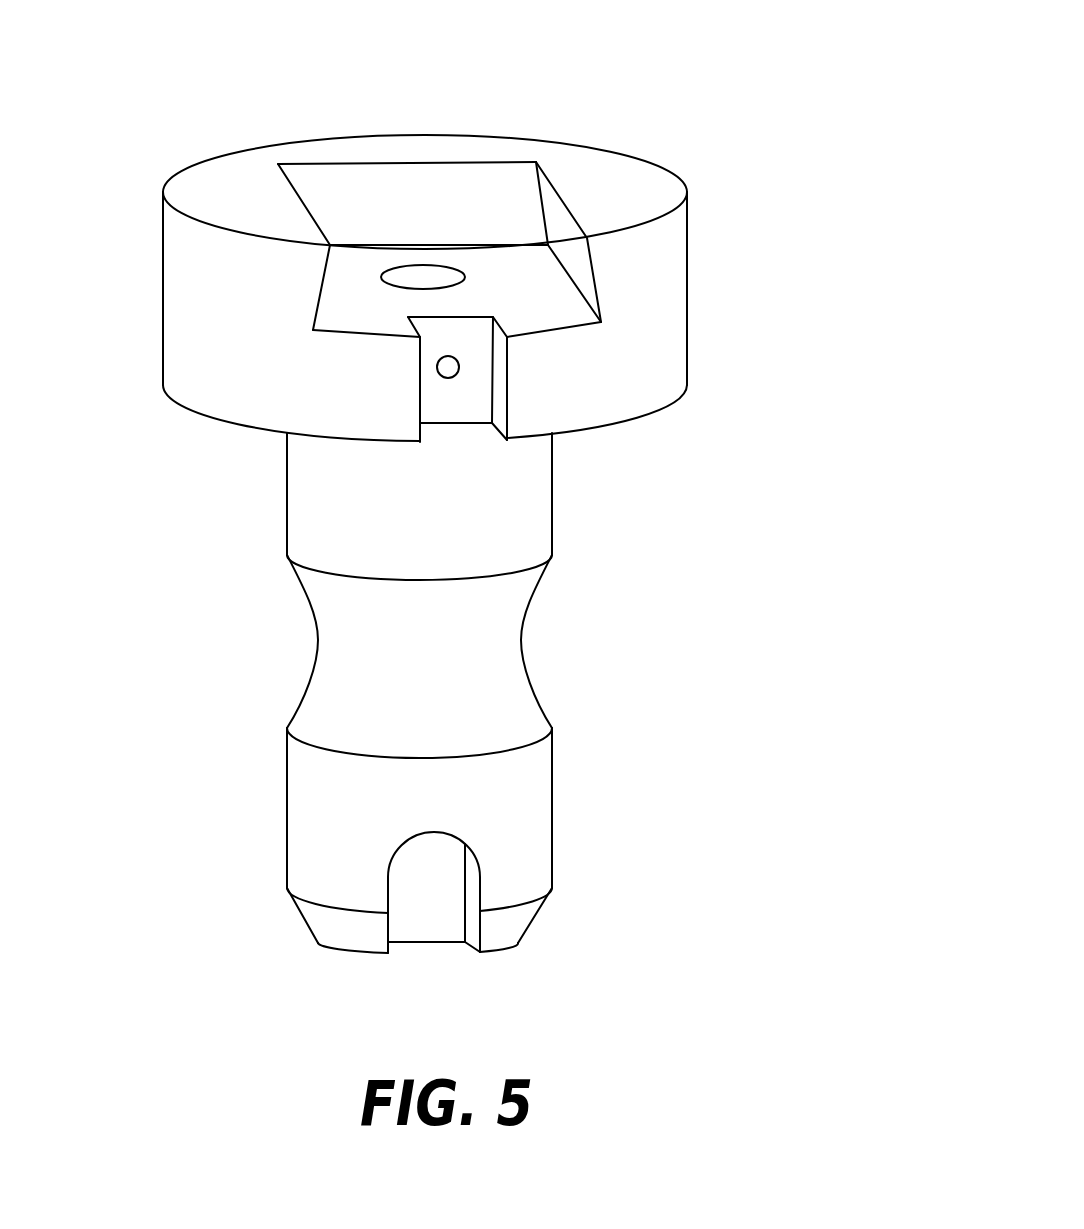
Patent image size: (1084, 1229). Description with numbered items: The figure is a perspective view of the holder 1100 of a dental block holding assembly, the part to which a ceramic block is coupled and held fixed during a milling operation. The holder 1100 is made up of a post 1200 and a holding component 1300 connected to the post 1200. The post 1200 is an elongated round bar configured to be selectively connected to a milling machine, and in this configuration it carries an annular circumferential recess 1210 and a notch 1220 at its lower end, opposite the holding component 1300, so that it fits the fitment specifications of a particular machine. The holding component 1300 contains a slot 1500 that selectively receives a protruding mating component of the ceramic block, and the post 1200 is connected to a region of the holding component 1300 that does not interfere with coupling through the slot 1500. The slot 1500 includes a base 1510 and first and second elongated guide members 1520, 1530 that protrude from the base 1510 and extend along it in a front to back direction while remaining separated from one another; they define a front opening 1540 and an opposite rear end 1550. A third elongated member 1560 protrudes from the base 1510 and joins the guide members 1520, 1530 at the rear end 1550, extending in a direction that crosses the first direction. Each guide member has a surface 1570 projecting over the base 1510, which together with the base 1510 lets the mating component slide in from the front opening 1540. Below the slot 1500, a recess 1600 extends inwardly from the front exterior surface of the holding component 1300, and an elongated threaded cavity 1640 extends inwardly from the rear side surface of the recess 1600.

The holder 1100 is at (493, 697).
The post 1200 is at (552, 778).
The annular circumferential recess 1210 is at (310, 687).
The notch 1220 is at (465, 893).
The holding component 1300 is at (688, 368).
The slot 1500 is at (515, 256).
The base 1510 is at (575, 260).
The first elongated guide member 1520 is at (647, 212).
The second elongated guide member 1530 is at (215, 192).
The front opening 1540 is at (550, 330).
The rear end 1550 is at (473, 153).
The third elongated member 1560 is at (327, 148).
The surface 1570 is at (322, 293).
The recess 1600 is at (508, 400).
The elongated threaded cavity 1640 is at (450, 380).